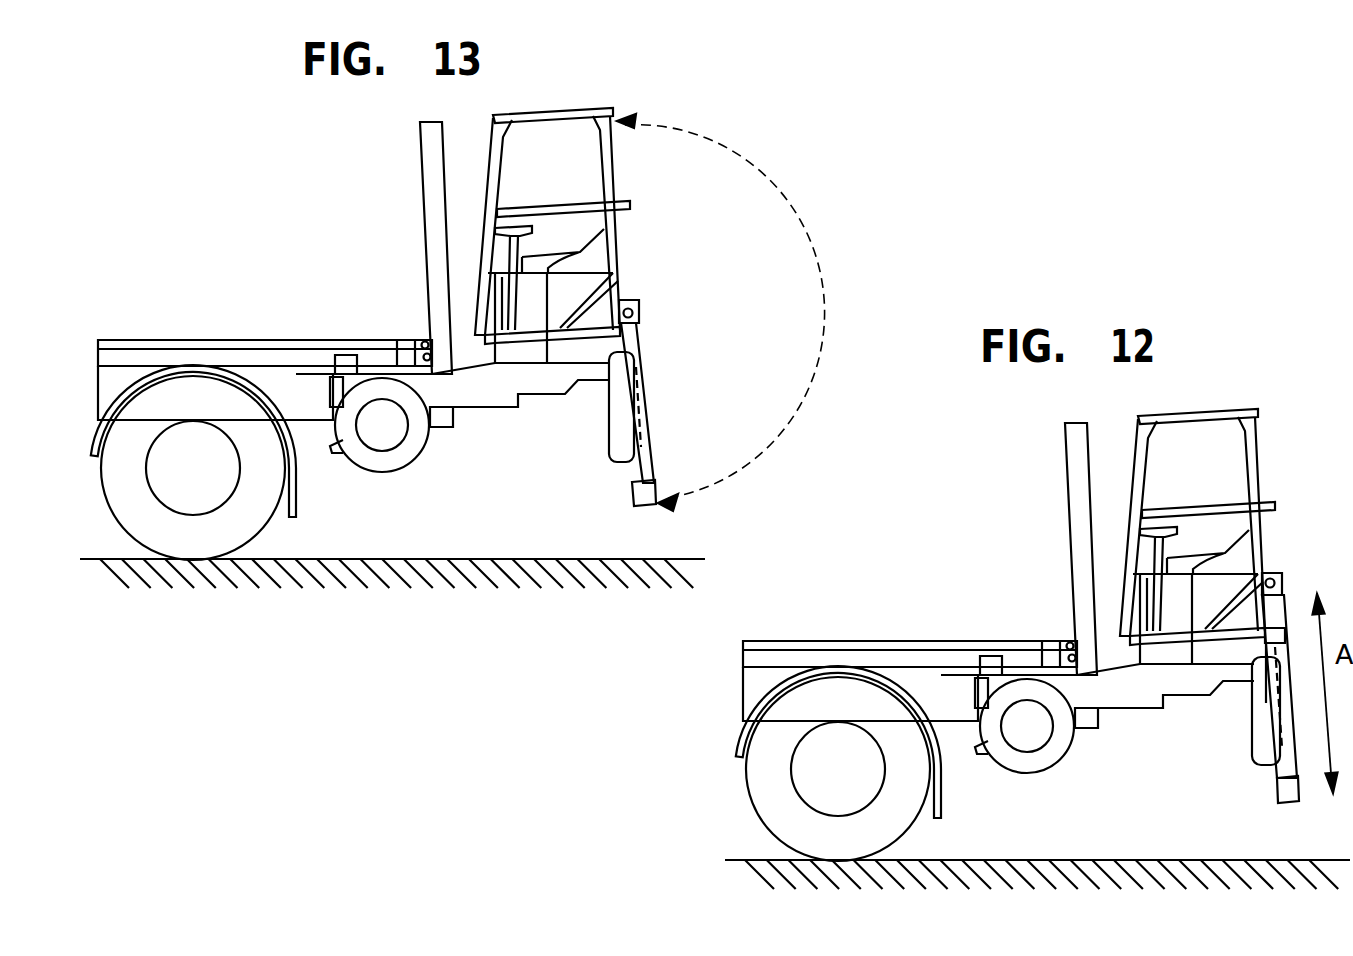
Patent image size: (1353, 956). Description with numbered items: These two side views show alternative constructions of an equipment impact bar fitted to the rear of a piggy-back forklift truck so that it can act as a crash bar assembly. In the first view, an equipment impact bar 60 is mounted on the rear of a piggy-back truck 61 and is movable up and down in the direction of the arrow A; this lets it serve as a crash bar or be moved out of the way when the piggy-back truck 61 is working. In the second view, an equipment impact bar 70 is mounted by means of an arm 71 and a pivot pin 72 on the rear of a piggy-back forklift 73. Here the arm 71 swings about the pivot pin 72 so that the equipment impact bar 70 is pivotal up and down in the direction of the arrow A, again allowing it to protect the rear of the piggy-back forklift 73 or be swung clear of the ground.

In FIG. 12, the equipment impact bar 60 is at (1278, 789).
In FIG. 12, the piggy-back truck 61 is at (1256, 462).
In FIG. 13, the equipment impact bar 70 is at (650, 492).
In FIG. 13, the arm 71 is at (638, 370).
In FIG. 13, the pivot pin 72 is at (633, 313).
In FIG. 13, the piggy-back forklift 73 is at (610, 176).